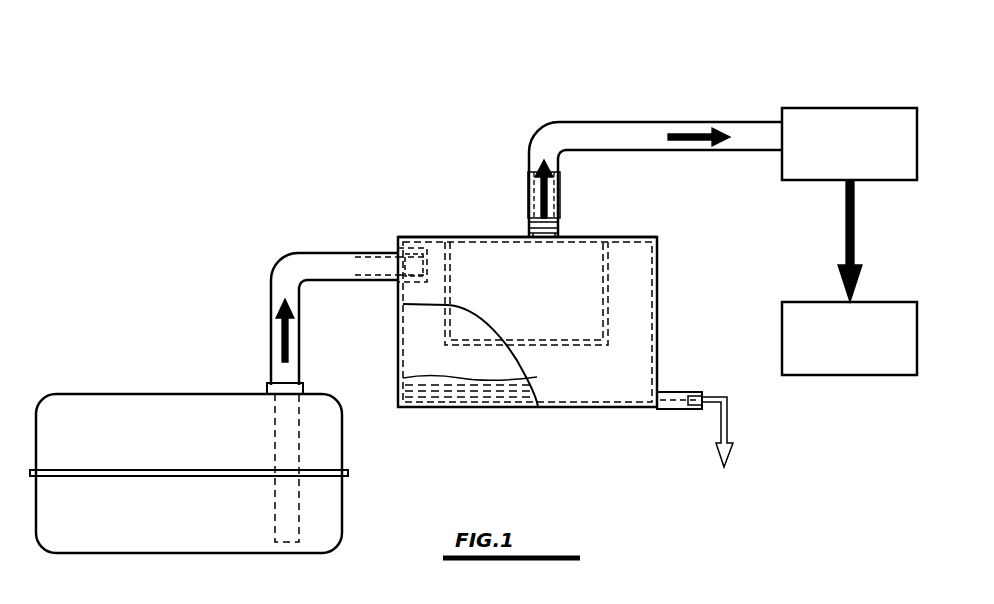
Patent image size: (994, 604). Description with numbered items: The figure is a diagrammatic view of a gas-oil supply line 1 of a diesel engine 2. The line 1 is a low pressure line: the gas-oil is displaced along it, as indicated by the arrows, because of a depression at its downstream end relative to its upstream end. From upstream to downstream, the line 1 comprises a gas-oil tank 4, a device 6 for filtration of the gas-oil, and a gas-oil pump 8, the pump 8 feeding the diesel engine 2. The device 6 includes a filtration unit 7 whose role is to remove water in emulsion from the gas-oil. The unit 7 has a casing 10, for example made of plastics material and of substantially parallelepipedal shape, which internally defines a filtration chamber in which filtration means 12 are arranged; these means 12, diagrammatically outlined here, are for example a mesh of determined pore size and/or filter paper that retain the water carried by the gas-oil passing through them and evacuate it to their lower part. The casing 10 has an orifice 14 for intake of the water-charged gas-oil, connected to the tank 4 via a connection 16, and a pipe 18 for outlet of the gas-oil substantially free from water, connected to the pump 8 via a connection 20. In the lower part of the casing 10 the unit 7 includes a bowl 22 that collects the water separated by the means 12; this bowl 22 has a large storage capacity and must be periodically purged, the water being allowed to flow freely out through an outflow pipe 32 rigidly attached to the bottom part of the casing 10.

The gas-oil supply line 1 is at (245, 123).
The diesel engine 2 is at (849, 338).
The gas-oil tank 4 is at (122, 410).
The device for filtration of the gas-oil 6 is at (586, 416).
The filtration unit 7 is at (672, 234).
The gas-oil pump 8 is at (849, 205).
The casing 10 is at (398, 358).
The filtration means 12 is at (447, 325).
The orifice for intake of the gas-oil 14 is at (396, 262).
The connection 16 is at (271, 300).
The pipe for outlet of the gas-oil 18 is at (556, 198).
The connection 20 is at (633, 128).
The bowl 22 is at (463, 407).
The outflow pipe 32 is at (676, 392).